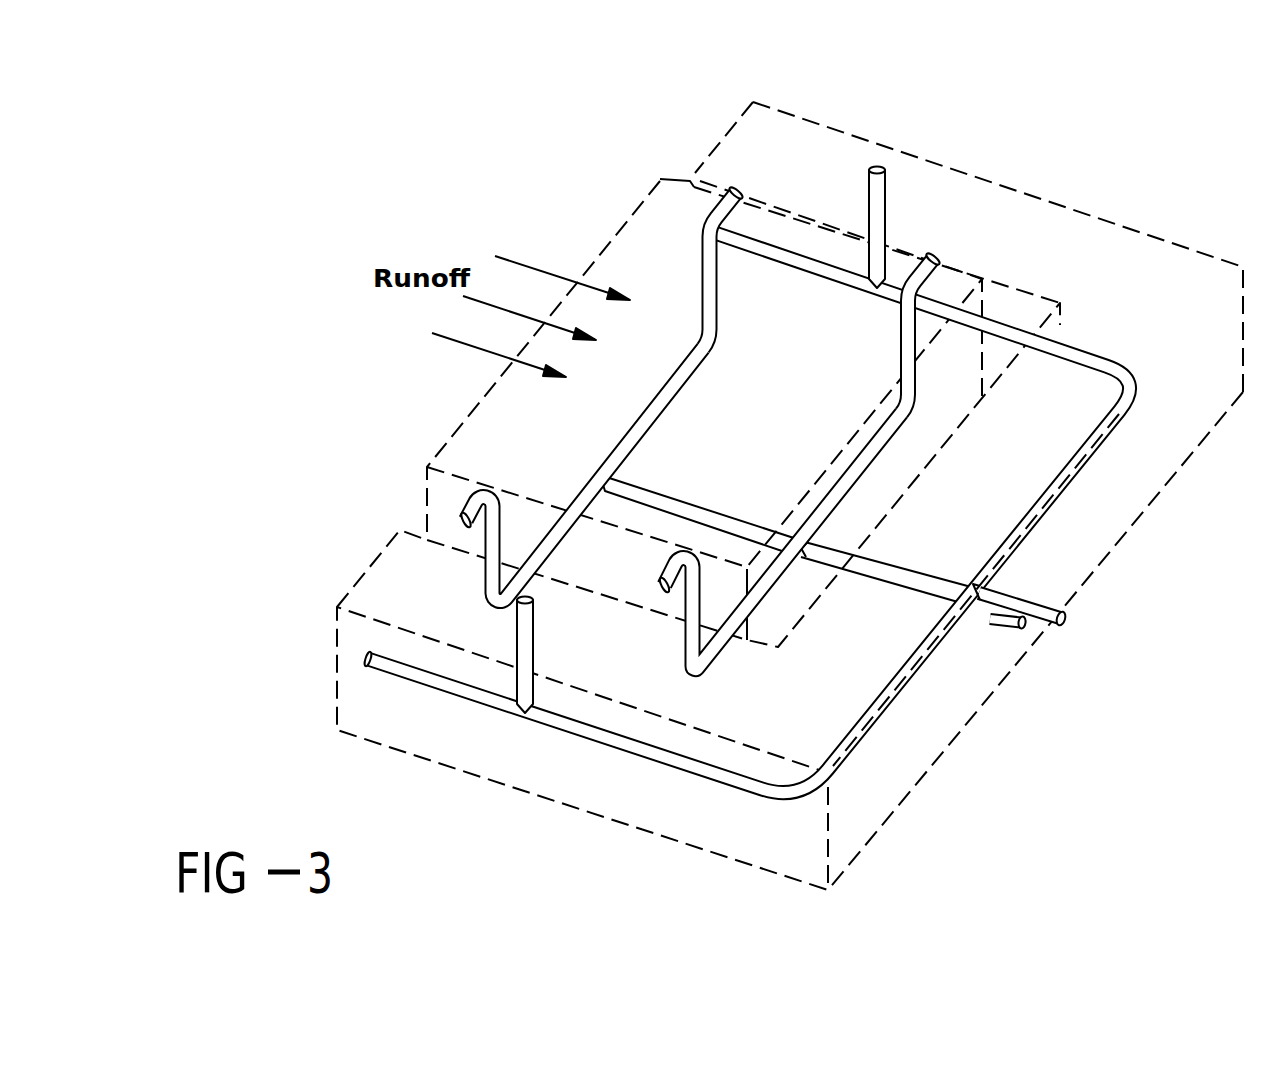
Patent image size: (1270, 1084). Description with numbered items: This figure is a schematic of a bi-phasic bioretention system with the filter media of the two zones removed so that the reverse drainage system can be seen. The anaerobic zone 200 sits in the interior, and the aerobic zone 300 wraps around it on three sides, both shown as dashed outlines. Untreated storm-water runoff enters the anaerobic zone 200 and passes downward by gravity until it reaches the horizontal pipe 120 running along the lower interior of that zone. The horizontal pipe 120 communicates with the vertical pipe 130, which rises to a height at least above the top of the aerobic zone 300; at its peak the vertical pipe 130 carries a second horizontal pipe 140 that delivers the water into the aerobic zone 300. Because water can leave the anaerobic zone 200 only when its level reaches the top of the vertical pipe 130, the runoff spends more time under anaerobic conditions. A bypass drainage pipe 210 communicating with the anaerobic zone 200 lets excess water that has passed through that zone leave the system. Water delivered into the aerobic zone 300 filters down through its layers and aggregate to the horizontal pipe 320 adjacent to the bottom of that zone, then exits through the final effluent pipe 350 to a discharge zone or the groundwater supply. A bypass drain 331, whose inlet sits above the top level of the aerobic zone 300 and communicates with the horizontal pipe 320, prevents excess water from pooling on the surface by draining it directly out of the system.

The horizontal pipe 120 is at (654, 421).
The vertical pipe 130 is at (702, 292).
The second horizontal pipe 140 is at (738, 192).
The anaerobic zone 200 is at (657, 238).
The bypass drainage pipe 210 is at (993, 612).
The aerobic zone 300 is at (397, 584).
The horizontal pipe 320 is at (629, 740).
The bypass drain 331 is at (518, 678).
The final effluent pipe 350 is at (1043, 604).